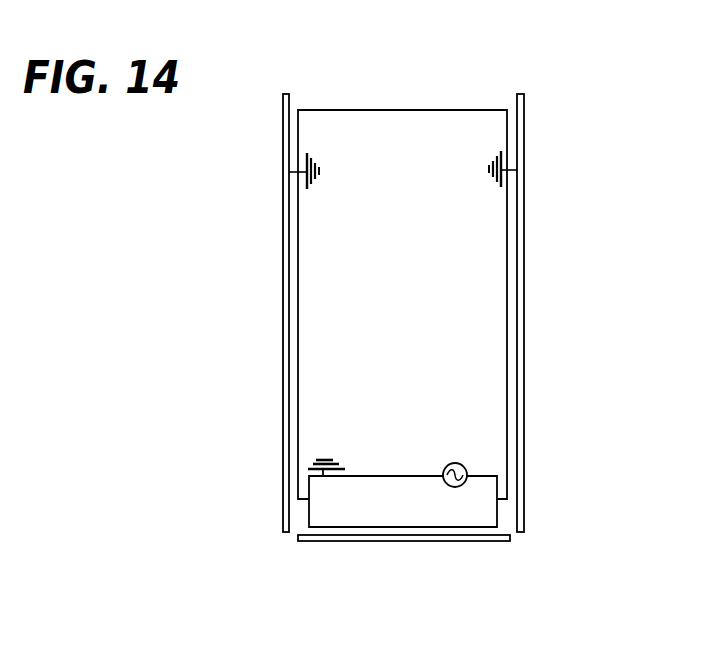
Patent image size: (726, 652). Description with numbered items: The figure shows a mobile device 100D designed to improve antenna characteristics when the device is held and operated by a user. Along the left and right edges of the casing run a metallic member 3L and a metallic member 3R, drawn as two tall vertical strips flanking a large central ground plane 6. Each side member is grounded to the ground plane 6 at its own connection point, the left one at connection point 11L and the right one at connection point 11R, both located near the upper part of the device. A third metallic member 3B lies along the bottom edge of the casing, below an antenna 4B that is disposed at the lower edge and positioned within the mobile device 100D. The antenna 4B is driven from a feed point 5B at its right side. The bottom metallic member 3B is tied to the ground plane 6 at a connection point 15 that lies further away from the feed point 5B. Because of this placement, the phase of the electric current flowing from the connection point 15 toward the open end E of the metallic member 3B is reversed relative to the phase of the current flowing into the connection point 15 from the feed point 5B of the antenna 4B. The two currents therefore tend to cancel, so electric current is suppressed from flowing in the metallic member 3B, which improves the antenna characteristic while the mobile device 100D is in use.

The mobile device 100D is at (527, 38).
The metallic member 3L is at (281, 152).
The metallic member 3R is at (525, 135).
The metallic member 3B is at (440, 542).
The ground plane 6 is at (383, 118).
The connection point 11L is at (300, 171).
The connection point 11R is at (520, 168).
The antenna 4B is at (385, 528).
The feed point 5B is at (460, 463).
The connection point 15 is at (323, 476).
The open end E is at (286, 533).